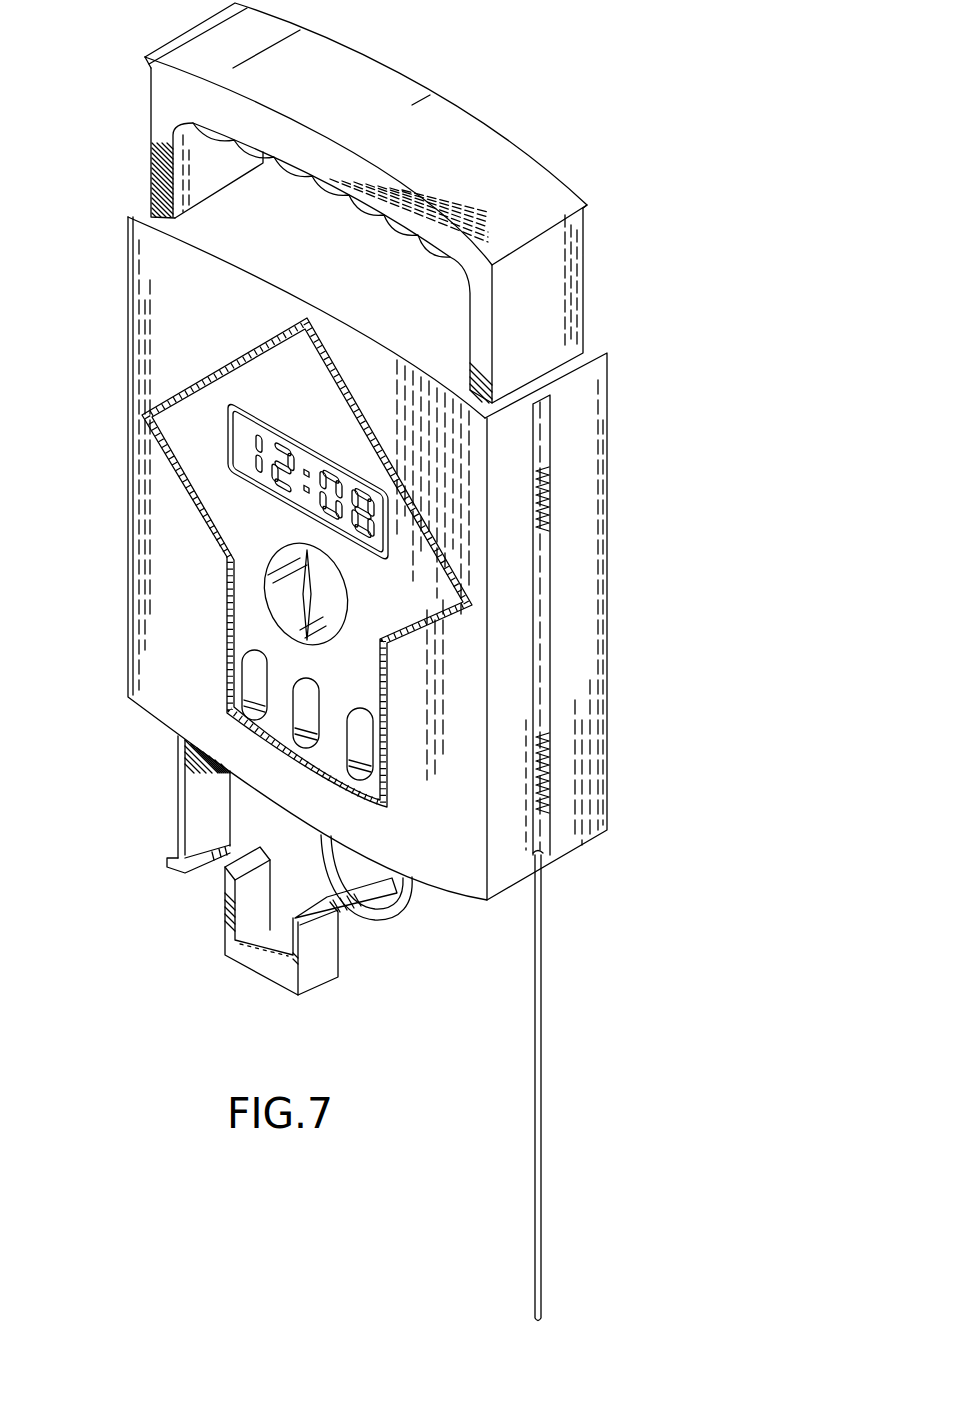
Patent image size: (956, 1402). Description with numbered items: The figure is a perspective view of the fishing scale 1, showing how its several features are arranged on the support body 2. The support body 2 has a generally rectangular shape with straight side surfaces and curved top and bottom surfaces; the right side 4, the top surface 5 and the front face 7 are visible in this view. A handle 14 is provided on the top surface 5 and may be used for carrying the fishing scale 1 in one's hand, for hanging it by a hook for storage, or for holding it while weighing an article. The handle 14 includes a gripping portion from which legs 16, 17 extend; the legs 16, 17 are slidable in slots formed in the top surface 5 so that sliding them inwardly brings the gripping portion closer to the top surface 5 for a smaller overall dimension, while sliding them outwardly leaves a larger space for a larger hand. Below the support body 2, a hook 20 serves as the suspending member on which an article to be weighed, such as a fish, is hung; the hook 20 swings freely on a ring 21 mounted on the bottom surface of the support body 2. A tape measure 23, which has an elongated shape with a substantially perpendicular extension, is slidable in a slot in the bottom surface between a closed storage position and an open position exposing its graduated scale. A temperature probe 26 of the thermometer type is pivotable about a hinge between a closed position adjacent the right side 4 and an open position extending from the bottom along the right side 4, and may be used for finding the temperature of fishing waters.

The fishing scale 1 is at (40, 347).
The support body 2 is at (458, 520).
The right side 4 is at (575, 597).
The top surface 5 is at (278, 230).
The front face 7 is at (190, 583).
The handle 14 is at (457, 142).
The leg 16 is at (165, 140).
The leg 17 is at (540, 288).
The hook 20 is at (260, 967).
The ring 21 is at (413, 907).
The tape measure 23 is at (205, 810).
The temperature probe 26 is at (545, 1118).